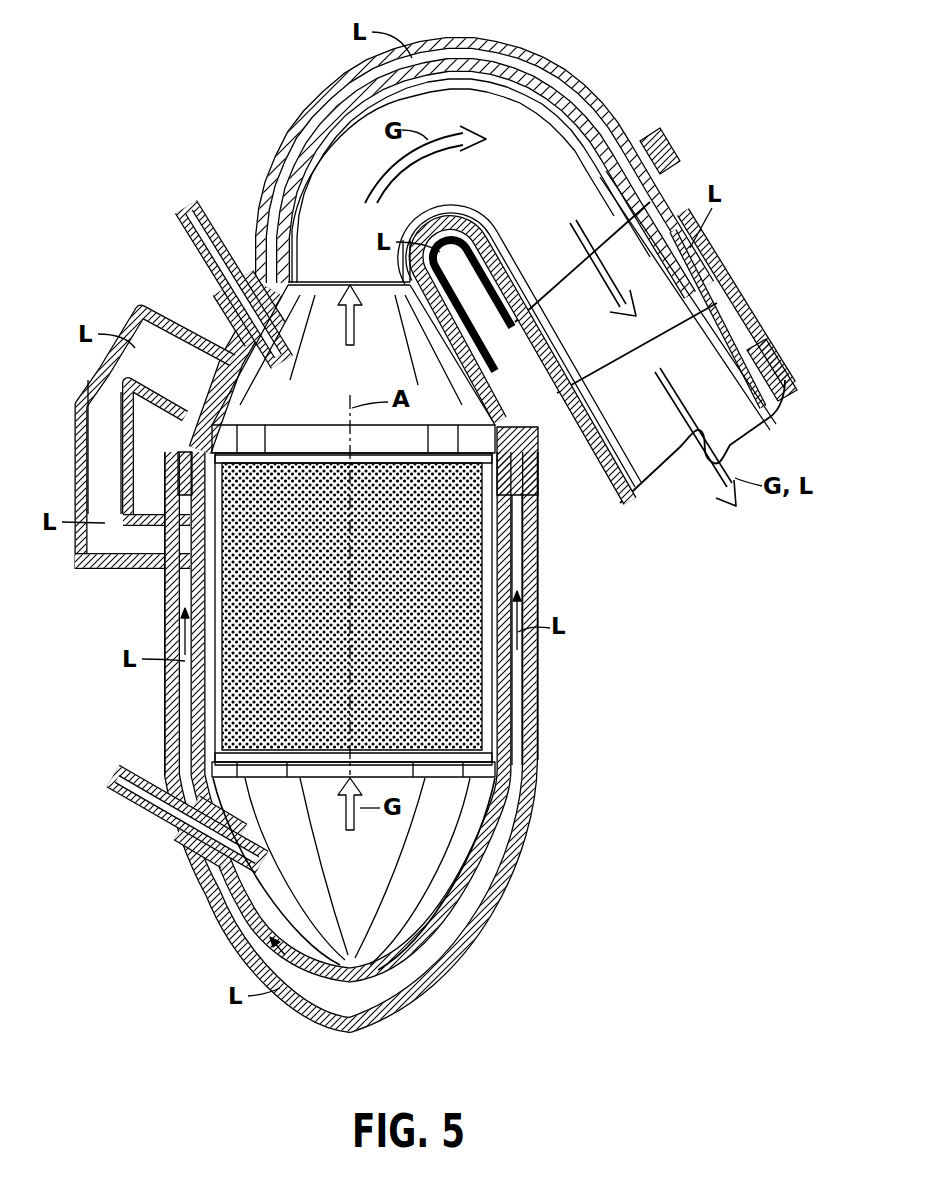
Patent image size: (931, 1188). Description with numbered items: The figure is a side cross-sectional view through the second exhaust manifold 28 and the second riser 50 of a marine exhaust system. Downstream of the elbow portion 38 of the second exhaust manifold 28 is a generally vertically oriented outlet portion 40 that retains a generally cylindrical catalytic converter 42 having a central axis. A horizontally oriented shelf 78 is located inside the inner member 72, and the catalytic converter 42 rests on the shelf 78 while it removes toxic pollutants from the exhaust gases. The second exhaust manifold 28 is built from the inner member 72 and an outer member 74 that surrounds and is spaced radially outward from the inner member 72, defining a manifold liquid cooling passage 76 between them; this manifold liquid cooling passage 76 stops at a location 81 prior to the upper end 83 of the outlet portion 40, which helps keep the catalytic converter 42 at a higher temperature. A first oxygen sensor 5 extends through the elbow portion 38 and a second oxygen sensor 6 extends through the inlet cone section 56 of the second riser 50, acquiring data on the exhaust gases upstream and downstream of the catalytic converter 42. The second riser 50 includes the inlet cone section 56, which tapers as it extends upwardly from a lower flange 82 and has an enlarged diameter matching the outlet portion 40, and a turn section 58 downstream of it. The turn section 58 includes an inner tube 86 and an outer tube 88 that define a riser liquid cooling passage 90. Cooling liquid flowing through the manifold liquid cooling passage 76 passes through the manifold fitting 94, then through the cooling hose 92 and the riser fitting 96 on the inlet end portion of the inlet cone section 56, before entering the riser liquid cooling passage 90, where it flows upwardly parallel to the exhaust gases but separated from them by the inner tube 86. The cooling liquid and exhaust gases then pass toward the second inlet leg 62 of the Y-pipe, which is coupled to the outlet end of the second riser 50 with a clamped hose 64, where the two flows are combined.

The first oxygen sensor 5 is at (110, 782).
The second oxygen sensor 6 is at (184, 215).
The second exhaust manifold 28 is at (292, 1030).
The elbow portion 38 is at (419, 1019).
The outlet portion 40 is at (366, 753).
The catalytic converter 42 is at (465, 575).
The second riser 50 is at (521, 263).
The inlet cone section 56 is at (320, 397).
The turn section 58 is at (618, 112).
The second inlet leg 62 is at (786, 397).
The clamped hose 64 is at (706, 262).
The inner member 72 is at (495, 830).
The outer member 74 is at (537, 703).
The manifold liquid cooling passage 76 is at (185, 598).
The shelf 78 is at (305, 780).
The location 81 is at (527, 505).
The lower flange 82 is at (527, 450).
The upper end 83 is at (560, 480).
The inner tube 86 is at (298, 178).
The outer tube 88 is at (300, 105).
The riser liquid cooling passage 90 is at (322, 132).
The cooling hose 92 is at (72, 436).
The manifold fitting 94 is at (76, 560).
The riser fitting 96 is at (163, 330).